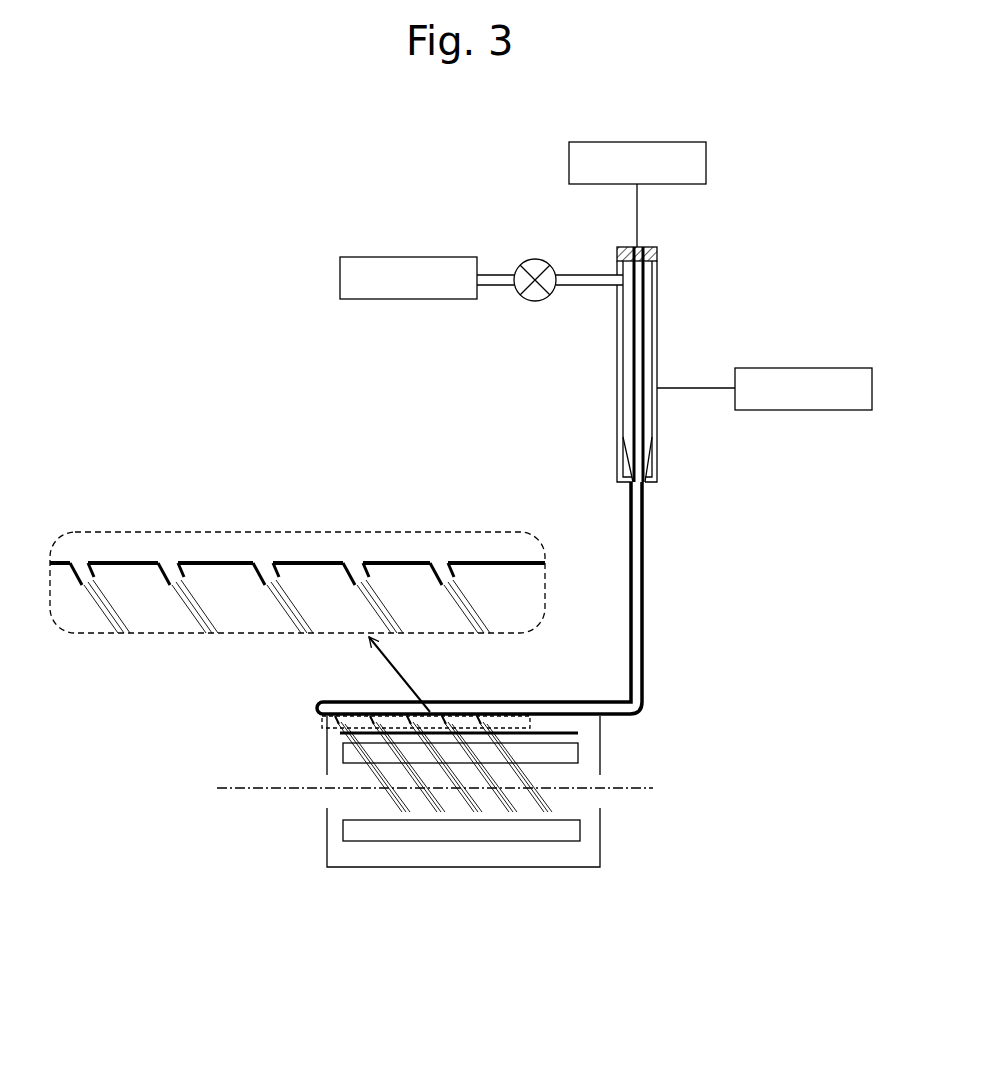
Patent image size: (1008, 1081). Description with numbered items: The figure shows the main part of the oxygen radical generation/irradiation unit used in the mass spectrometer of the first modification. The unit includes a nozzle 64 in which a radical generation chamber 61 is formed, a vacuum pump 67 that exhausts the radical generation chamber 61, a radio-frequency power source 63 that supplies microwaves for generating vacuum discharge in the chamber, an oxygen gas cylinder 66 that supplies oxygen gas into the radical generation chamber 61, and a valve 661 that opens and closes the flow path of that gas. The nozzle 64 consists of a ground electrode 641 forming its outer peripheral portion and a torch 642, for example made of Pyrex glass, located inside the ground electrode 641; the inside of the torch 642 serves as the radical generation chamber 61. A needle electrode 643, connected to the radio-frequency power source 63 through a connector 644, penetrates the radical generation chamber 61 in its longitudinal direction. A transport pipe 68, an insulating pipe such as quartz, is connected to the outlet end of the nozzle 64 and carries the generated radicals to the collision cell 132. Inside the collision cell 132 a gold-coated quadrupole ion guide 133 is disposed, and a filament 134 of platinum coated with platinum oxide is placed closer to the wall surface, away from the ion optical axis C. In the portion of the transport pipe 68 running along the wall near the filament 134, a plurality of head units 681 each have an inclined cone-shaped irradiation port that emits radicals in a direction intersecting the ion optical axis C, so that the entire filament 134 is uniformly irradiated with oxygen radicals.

The radio-frequency power source 63 is at (658, 141).
The connector 644 is at (657, 253).
The ground electrode 641 is at (615, 328).
The torch 642 is at (618, 400).
The needle electrode 643 is at (639, 323).
The radical generation chamber 61 is at (646, 400).
The nozzle 64 is at (603, 479).
The oxygen gas cylinder 66 is at (403, 257).
The valve 661 is at (532, 302).
The vacuum pump 67 is at (830, 410).
The transport pipe 68 is at (643, 560).
The head unit 681 is at (431, 552).
The filament 134 is at (553, 728).
The quadrupole ion guide 133 is at (343, 842).
The collision cell 132 is at (515, 867).
The ion optical axis C is at (252, 790).